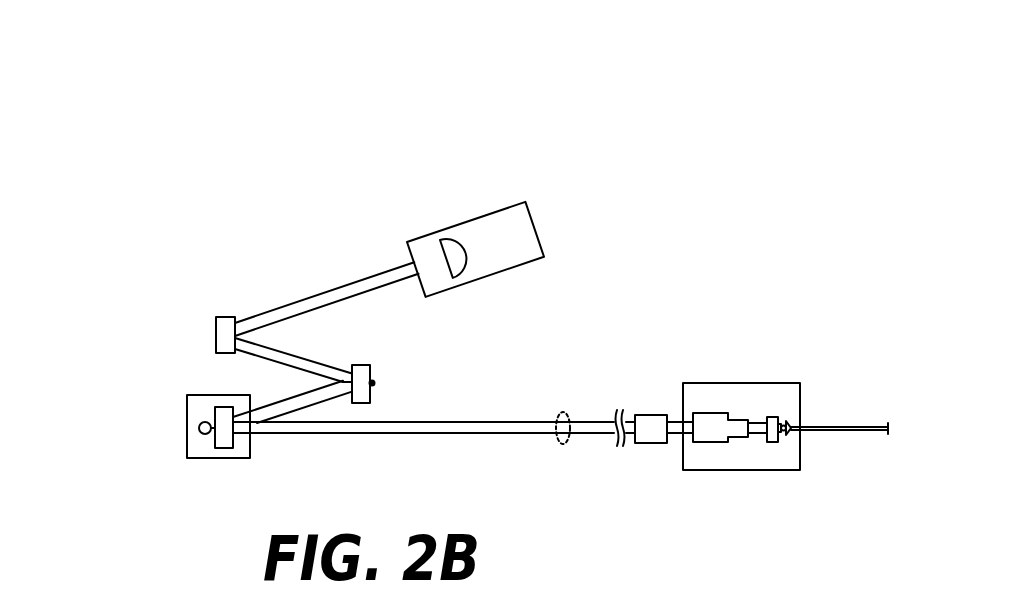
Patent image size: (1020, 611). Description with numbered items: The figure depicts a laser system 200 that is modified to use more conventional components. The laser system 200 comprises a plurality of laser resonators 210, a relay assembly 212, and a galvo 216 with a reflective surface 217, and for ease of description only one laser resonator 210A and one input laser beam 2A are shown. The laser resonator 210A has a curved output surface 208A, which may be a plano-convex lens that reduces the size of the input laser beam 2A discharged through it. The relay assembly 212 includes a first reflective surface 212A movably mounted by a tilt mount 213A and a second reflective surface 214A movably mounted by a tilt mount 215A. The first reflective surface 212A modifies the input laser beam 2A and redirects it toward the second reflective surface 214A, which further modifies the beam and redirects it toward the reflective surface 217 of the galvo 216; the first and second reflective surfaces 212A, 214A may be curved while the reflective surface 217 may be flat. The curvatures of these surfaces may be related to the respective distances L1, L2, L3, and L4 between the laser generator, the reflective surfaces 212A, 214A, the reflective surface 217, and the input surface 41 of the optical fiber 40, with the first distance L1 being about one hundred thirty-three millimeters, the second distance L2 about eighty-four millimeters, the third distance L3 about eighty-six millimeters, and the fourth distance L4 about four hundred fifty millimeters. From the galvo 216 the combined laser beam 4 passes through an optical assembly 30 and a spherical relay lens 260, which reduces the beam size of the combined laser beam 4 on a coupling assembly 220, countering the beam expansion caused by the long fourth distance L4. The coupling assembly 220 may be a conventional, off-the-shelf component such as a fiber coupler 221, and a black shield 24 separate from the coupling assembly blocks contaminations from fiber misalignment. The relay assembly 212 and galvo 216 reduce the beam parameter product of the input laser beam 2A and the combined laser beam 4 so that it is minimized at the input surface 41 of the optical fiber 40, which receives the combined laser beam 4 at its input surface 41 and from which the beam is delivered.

The laser system 200 is at (240, 124).
The plurality of laser resonators 210 is at (572, 213).
The laser resonator 210A is at (500, 202).
The curved output surface 208A is at (430, 240).
The input laser beam 2A is at (327, 293).
The first distance L1 is at (302, 300).
The second distance L2 is at (341, 372).
The third distance L3 is at (268, 408).
The fourth distance L4 is at (561, 444).
The relay assembly 212 is at (142, 286).
The first reflective surface 212A is at (238, 352).
The tilt mount 213A is at (216, 337).
The second reflective surface 214A is at (357, 366).
The tilt mount 215A is at (373, 383).
The galvo 216 is at (187, 425).
The reflective surface 217 is at (233, 446).
The combined laser beam 4 is at (596, 434).
The spherical relay lens 260 is at (566, 413).
The optical assembly 30 is at (650, 443).
The coupling assembly 220 is at (755, 383).
The fiber coupler 221 is at (705, 442).
The black shield 24 is at (773, 442).
The input surface 41 is at (790, 425).
The optical fiber 40 is at (842, 427).